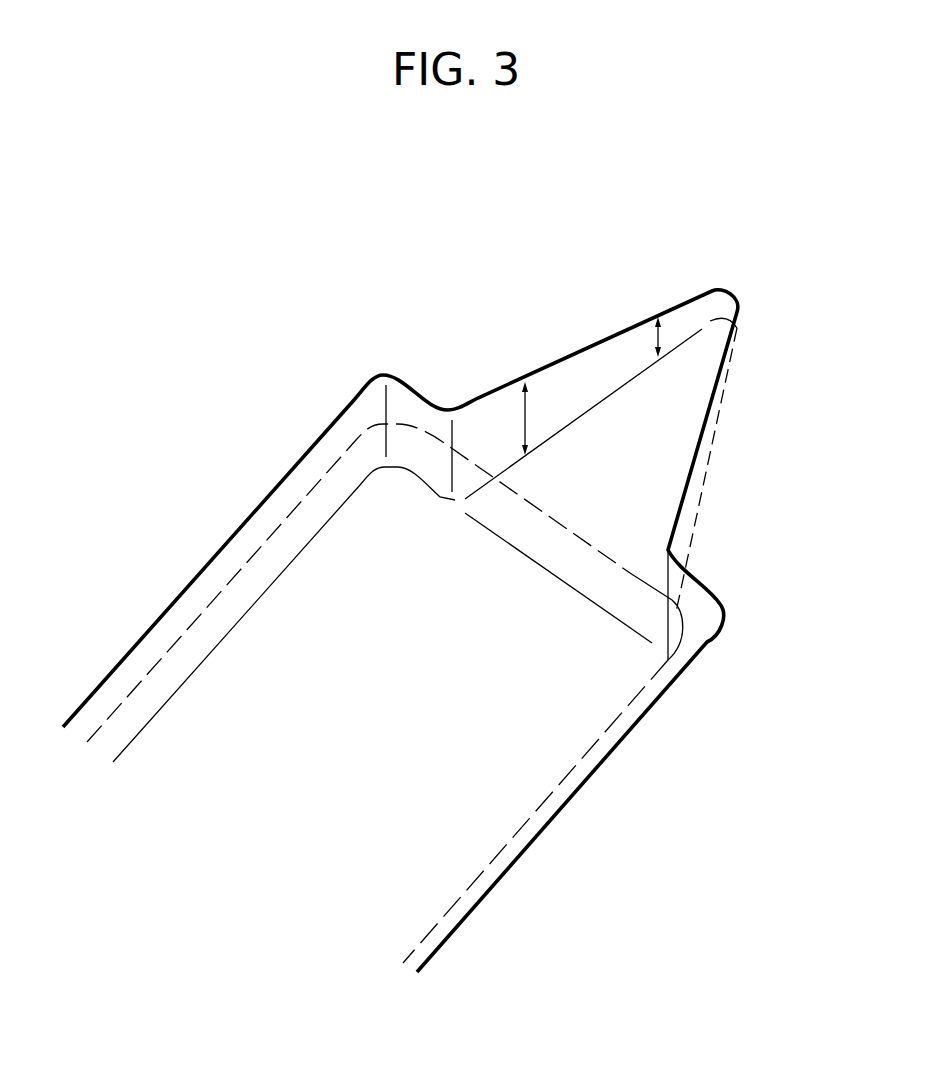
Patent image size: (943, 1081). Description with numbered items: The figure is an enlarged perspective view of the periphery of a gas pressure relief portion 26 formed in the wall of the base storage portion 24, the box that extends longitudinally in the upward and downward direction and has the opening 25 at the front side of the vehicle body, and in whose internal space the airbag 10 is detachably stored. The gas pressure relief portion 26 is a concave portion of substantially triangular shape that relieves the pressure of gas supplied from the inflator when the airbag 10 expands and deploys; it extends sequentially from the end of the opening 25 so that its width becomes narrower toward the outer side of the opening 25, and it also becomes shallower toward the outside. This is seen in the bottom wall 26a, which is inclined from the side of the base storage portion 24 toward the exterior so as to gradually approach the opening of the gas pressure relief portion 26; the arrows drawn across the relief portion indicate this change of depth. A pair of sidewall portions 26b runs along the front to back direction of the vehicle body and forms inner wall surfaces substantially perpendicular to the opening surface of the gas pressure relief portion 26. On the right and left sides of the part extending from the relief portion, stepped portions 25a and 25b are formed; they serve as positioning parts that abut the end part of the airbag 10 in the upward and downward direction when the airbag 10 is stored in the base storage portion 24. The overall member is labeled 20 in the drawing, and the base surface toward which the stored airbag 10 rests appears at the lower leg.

The airbag 10 is at (540, 810).
The bracket / attachment member 20 is at (186, 233).
The base storage portion 24 is at (272, 683).
The opening 25 is at (364, 593).
The stepped portion 25a is at (418, 406).
The stepped portion 25b is at (705, 614).
The gas pressure relief portion 26 is at (639, 410).
The bottom wall 26a is at (678, 388).
The sidewall portion 26b is at (492, 425).